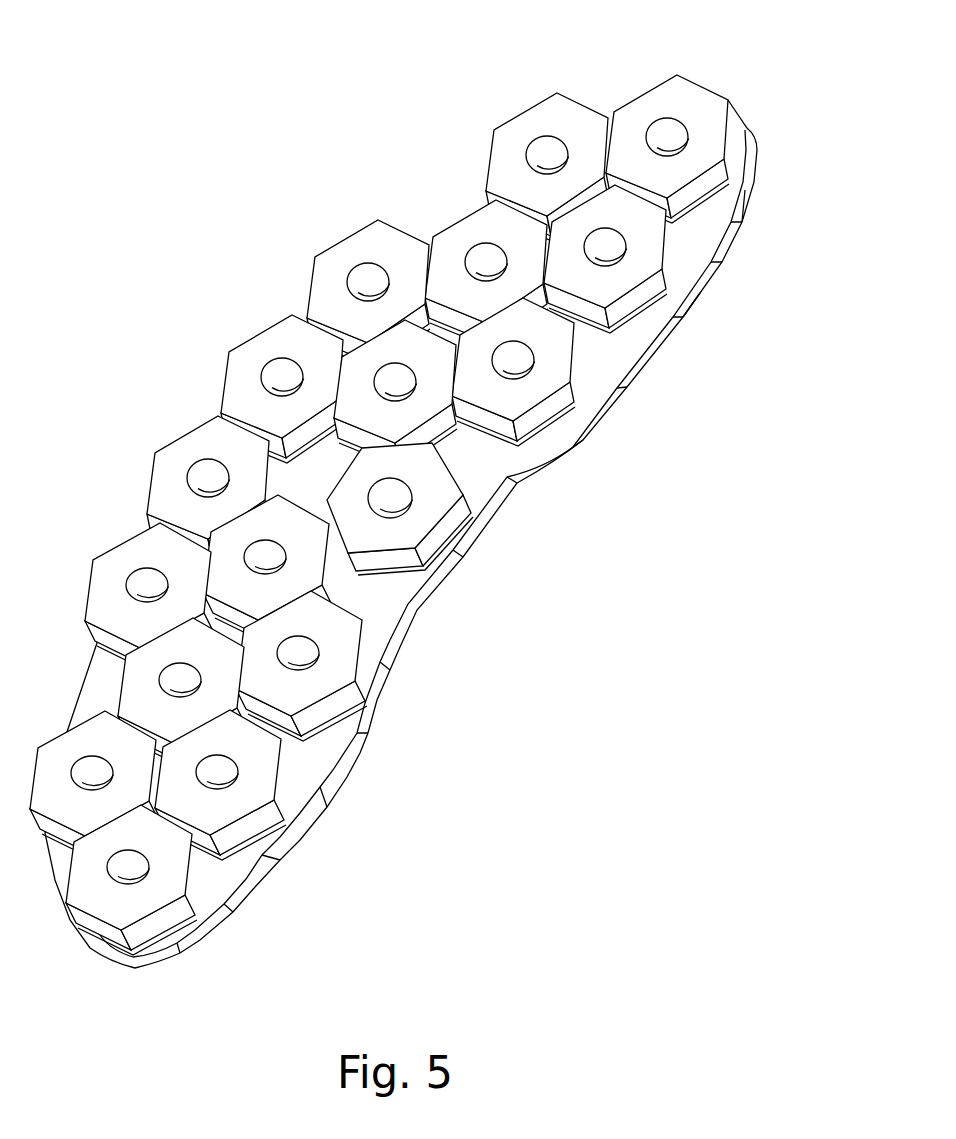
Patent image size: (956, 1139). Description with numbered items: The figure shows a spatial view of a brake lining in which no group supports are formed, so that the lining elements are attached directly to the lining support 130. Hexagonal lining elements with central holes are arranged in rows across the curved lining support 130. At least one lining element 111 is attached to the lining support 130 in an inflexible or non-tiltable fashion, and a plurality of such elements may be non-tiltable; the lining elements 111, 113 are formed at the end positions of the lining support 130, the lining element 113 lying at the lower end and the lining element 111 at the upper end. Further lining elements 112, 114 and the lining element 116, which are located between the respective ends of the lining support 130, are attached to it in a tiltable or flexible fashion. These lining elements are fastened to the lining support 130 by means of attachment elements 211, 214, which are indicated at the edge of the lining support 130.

The lining element 111 is at (667, 103).
The lining element 112 is at (528, 128).
The lining element 113 is at (137, 903).
The lining element 114 is at (643, 260).
The lining element 116 is at (556, 376).
The lining support 130 is at (513, 488).
The attachment element 211 is at (730, 204).
The attachment element 214 is at (660, 313).